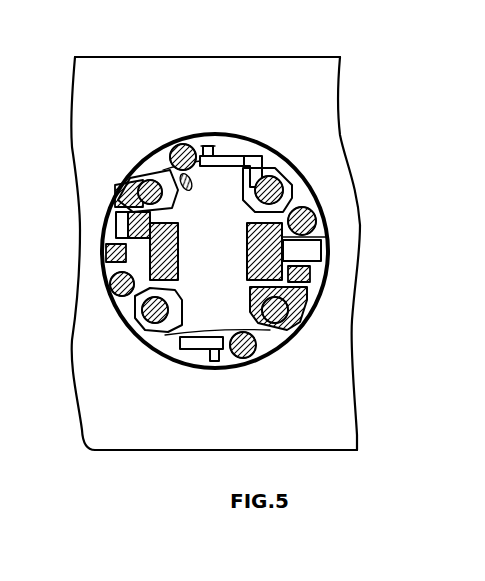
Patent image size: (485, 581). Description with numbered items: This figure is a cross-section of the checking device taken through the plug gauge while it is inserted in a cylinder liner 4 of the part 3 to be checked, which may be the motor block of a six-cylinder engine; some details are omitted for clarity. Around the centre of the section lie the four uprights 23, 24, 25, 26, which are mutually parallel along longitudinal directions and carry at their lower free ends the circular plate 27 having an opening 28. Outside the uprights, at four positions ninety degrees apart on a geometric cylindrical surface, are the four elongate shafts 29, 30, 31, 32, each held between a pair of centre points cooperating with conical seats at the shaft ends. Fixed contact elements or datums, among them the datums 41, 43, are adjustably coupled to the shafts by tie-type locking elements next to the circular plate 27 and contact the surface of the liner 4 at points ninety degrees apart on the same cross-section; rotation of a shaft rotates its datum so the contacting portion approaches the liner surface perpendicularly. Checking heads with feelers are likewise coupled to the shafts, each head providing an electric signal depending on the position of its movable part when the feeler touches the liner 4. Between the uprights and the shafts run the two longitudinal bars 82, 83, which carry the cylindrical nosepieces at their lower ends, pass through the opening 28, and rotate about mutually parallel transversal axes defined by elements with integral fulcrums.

The part to be checked 3 is at (288, 92).
The cylinder liner 4 is at (112, 212).
The upright 23 is at (262, 358).
The upright 24 is at (122, 296).
The upright 25 is at (190, 140).
The upright 26 is at (320, 212).
The circular plate 27 is at (232, 142).
The opening 28 is at (160, 155).
The shaft 29 is at (293, 318).
The shaft 30 is at (178, 340).
The shaft 31 is at (160, 158).
The shaft 32 is at (295, 180).
The datum 41 is at (212, 362).
The datum 43 is at (216, 146).
The longitudinal bar 82 is at (324, 238).
The longitudinal bar 83 is at (115, 266).